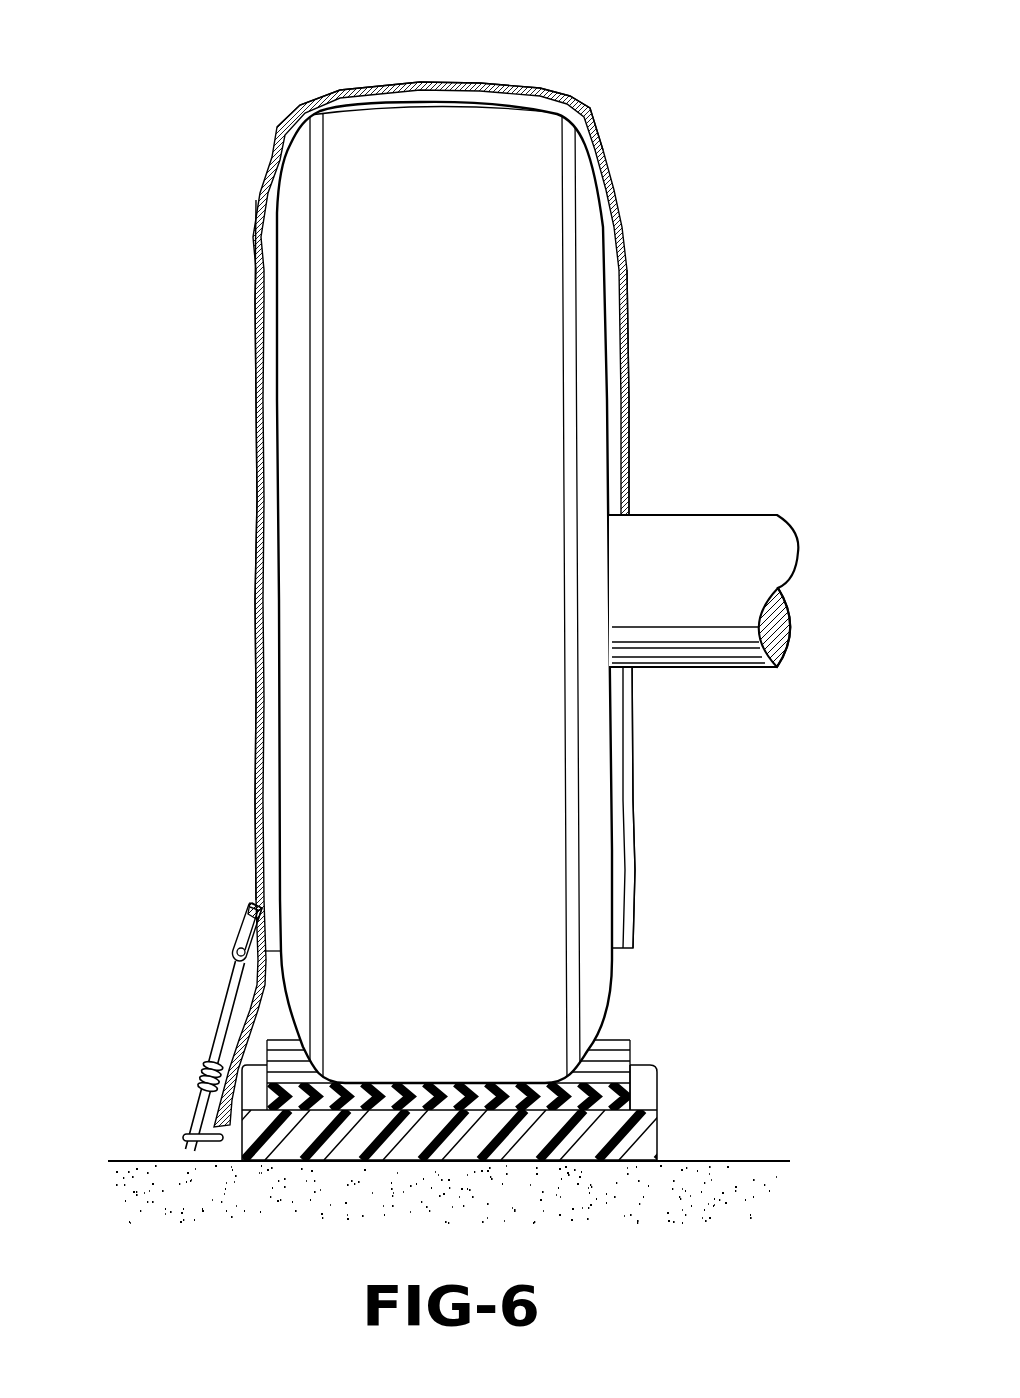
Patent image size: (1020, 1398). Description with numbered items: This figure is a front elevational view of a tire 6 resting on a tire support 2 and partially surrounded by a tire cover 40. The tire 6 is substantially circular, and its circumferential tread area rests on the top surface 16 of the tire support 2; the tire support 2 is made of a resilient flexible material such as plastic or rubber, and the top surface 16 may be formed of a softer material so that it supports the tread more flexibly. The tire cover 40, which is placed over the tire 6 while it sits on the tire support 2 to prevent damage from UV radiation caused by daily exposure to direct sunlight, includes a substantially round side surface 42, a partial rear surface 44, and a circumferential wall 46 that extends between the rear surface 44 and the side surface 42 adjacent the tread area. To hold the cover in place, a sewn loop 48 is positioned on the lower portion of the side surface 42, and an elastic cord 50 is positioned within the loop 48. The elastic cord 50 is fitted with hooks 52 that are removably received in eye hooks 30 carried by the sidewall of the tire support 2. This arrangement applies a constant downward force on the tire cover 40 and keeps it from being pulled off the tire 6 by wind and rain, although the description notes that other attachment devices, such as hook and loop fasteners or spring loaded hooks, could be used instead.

The tire support 2 is at (675, 1065).
The tire 6 is at (561, 782).
The top surface 16 is at (623, 1029).
The eye hooks 30 is at (185, 1138).
The tire cover 40 is at (447, 563).
The side surface 42 is at (255, 383).
The partial rear surface 44 is at (631, 382).
The circumferential wall 46 is at (417, 82).
The sewn loop 48 is at (238, 940).
The elastic cord 50 is at (222, 1022).
The hooks 52 is at (203, 1100).